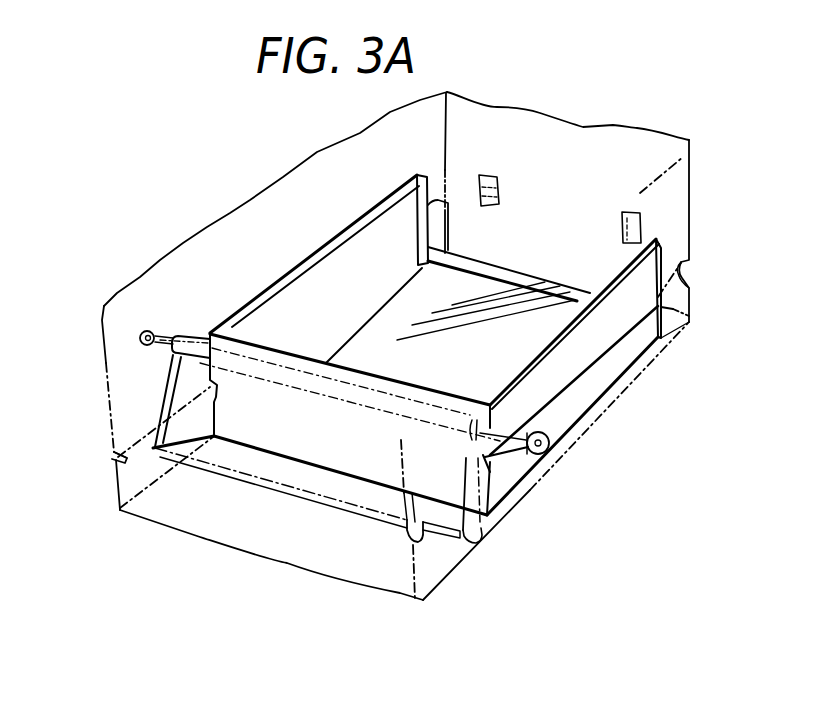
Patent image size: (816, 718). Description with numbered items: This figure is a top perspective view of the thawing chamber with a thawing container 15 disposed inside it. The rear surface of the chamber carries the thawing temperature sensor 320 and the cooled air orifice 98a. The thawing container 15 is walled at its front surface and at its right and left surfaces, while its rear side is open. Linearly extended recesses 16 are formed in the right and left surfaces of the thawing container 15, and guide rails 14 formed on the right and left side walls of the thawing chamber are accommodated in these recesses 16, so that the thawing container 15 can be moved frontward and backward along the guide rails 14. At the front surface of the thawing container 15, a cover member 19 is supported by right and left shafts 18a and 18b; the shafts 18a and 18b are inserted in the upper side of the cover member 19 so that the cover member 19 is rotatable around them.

The guide rail 14 is at (691, 285).
The thawing container 15 is at (598, 323).
The linearly extended recess 16 is at (567, 385).
The left shaft 18a is at (152, 328).
The right shaft 18b is at (540, 456).
The cover member 19 is at (477, 543).
The cooled air orifice 98a is at (489, 174).
The thawing temperature sensor 320 is at (628, 211).